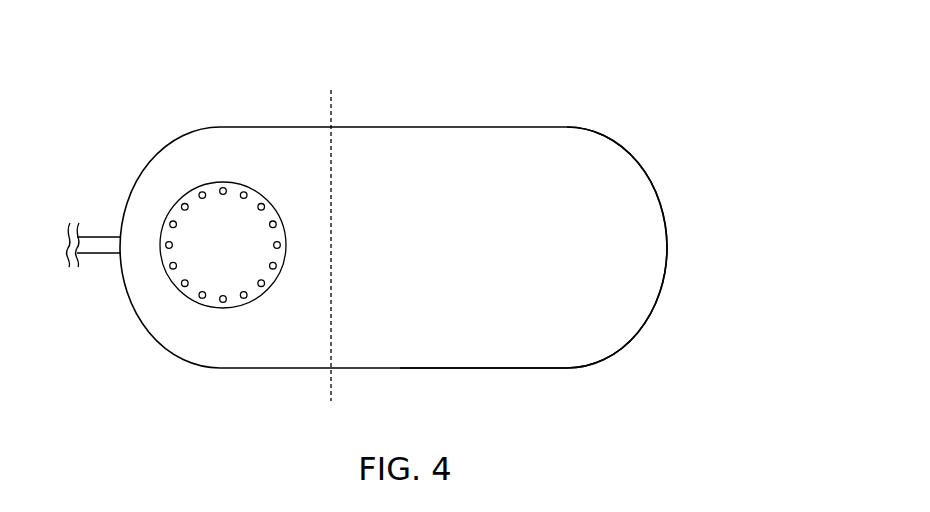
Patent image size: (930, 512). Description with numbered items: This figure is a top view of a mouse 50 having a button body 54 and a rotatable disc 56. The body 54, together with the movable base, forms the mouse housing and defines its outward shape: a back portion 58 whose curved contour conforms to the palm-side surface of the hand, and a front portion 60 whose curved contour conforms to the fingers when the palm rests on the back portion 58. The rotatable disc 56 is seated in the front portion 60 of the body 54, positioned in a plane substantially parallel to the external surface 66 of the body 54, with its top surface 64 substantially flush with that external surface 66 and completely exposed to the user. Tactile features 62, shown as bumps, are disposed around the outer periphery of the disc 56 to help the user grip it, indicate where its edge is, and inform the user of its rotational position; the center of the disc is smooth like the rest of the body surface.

The mouse 50 is at (465, 101).
The button body 54 is at (483, 358).
The rotatable disc 56 is at (203, 220).
The back portion 58 is at (331, 90).
The front portion 60 is at (331, 90).
The tactile features 62 is at (172, 222).
The top surface 64 is at (205, 264).
The external surface 66 is at (275, 182).